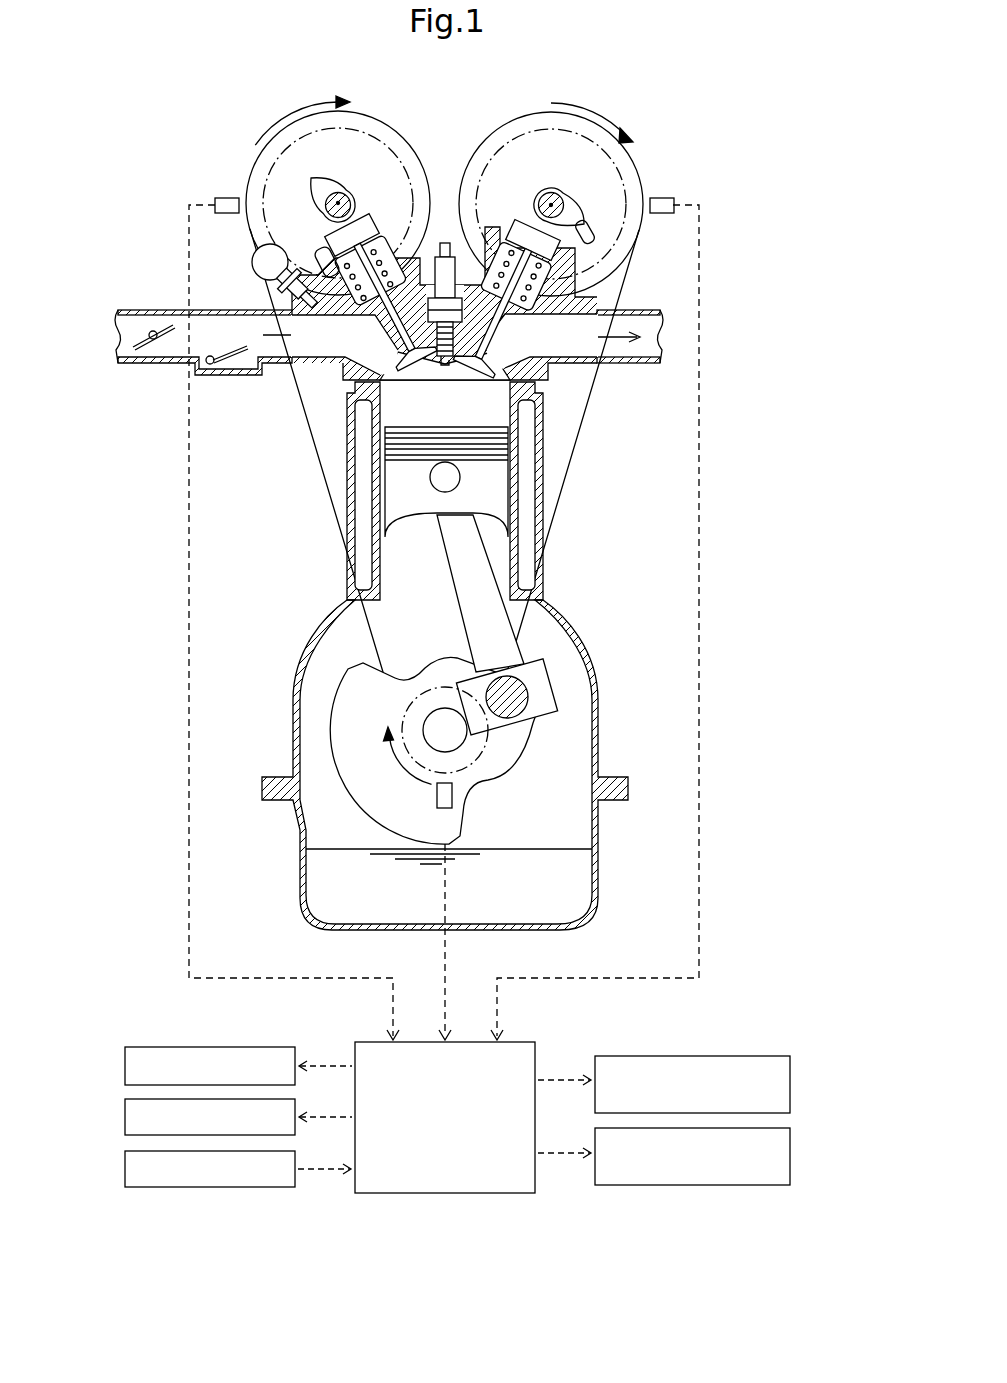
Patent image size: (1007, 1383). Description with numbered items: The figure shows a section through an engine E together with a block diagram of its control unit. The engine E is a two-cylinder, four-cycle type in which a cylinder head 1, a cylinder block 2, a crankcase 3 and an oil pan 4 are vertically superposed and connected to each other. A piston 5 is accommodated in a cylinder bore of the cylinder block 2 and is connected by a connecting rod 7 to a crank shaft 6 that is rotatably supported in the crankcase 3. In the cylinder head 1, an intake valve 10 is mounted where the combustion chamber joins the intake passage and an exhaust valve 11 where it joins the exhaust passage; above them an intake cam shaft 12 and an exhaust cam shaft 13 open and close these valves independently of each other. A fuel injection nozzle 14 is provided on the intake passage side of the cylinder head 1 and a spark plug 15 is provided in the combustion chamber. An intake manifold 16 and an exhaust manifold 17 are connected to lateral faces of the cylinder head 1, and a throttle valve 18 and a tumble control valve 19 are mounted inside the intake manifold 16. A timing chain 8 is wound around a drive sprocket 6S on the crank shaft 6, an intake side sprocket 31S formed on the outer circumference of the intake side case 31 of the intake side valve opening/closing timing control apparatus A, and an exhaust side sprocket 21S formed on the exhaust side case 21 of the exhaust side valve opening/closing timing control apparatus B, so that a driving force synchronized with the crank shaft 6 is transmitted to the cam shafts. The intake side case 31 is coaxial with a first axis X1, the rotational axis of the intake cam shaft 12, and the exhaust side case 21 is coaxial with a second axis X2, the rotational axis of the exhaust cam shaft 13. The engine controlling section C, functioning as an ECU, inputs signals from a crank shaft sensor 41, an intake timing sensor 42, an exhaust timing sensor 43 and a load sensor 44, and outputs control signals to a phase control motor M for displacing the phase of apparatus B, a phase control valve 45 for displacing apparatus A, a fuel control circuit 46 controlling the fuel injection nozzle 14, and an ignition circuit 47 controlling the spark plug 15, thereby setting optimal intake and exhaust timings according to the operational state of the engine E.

The cylinder head 1 is at (343, 378).
The cylinder block 2 is at (347, 468).
The crankcase 3 is at (598, 705).
The oil pan 4 is at (592, 866).
The piston 5 is at (456, 427).
The crank shaft 6 is at (459, 746).
The drive sprocket 6S is at (437, 680).
The connecting rod 7 is at (450, 572).
The timing chain 8 is at (591, 408).
The intake valve 10 is at (420, 370).
The exhaust valve 11 is at (495, 370).
The intake cam shaft 12 is at (320, 210).
The exhaust cam shaft 13 is at (582, 216).
The fuel injection nozzle 14 is at (257, 273).
The spark plug 15 is at (445, 243).
The intake manifold 16 is at (175, 310).
The exhaust manifold 17 is at (638, 310).
The throttle valve 18 is at (143, 347).
The tumble control valve 19 is at (233, 365).
The exhaust side case 21 is at (567, 132).
The exhaust side sprocket 21S is at (495, 127).
The intake side case 31 is at (327, 130).
The intake side sprocket 31S is at (391, 133).
The crank shaft sensor 41 is at (437, 795).
The intake timing sensor 42 is at (221, 198).
The exhaust timing sensor 43 is at (661, 198).
The load sensor 44 is at (125, 1169).
The phase control valve 45 is at (790, 1085).
The fuel control circuit 46 is at (125, 1117).
The ignition circuit 47 is at (125, 1066).
The intake side valve opening/closing timing control apparatus A is at (258, 144).
The exhaust side valve opening/closing timing control apparatus B is at (630, 144).
The engine controlling section C is at (445, 1193).
The engine E is at (140, 461).
The phase control motor M is at (790, 1155).
The first axis X1 is at (338, 203).
The second axis X2 is at (552, 205).